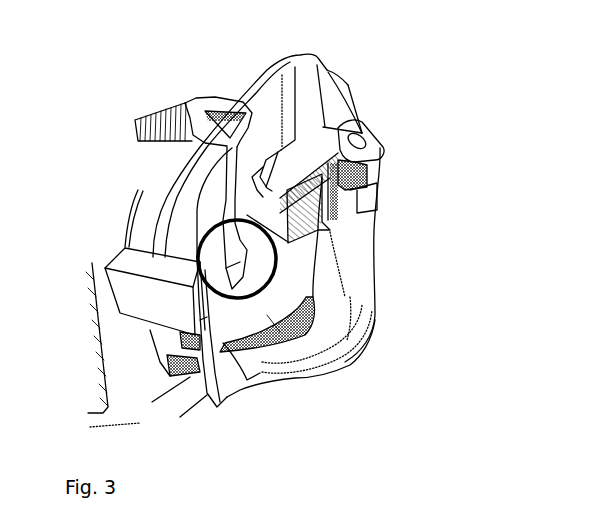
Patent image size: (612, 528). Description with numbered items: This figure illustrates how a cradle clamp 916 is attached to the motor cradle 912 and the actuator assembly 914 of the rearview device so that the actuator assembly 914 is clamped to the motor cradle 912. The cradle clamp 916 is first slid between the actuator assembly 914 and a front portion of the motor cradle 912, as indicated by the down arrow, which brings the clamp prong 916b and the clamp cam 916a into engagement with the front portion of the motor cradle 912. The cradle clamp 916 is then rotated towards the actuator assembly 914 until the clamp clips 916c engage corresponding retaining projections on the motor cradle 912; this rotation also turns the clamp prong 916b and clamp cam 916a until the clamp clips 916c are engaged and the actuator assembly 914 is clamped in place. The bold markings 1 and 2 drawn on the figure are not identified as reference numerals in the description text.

The motor cradle 912 is at (372, 306).
The actuator assembly 914 is at (290, 335).
The cradle clamp 916 is at (364, 120).
The clamp cam 916a is at (305, 258).
The clamp prong 916b is at (222, 272).
The clamp clips 916c is at (208, 98).
The first position 1 is at (289, 283).
The second position 2 is at (138, 185).